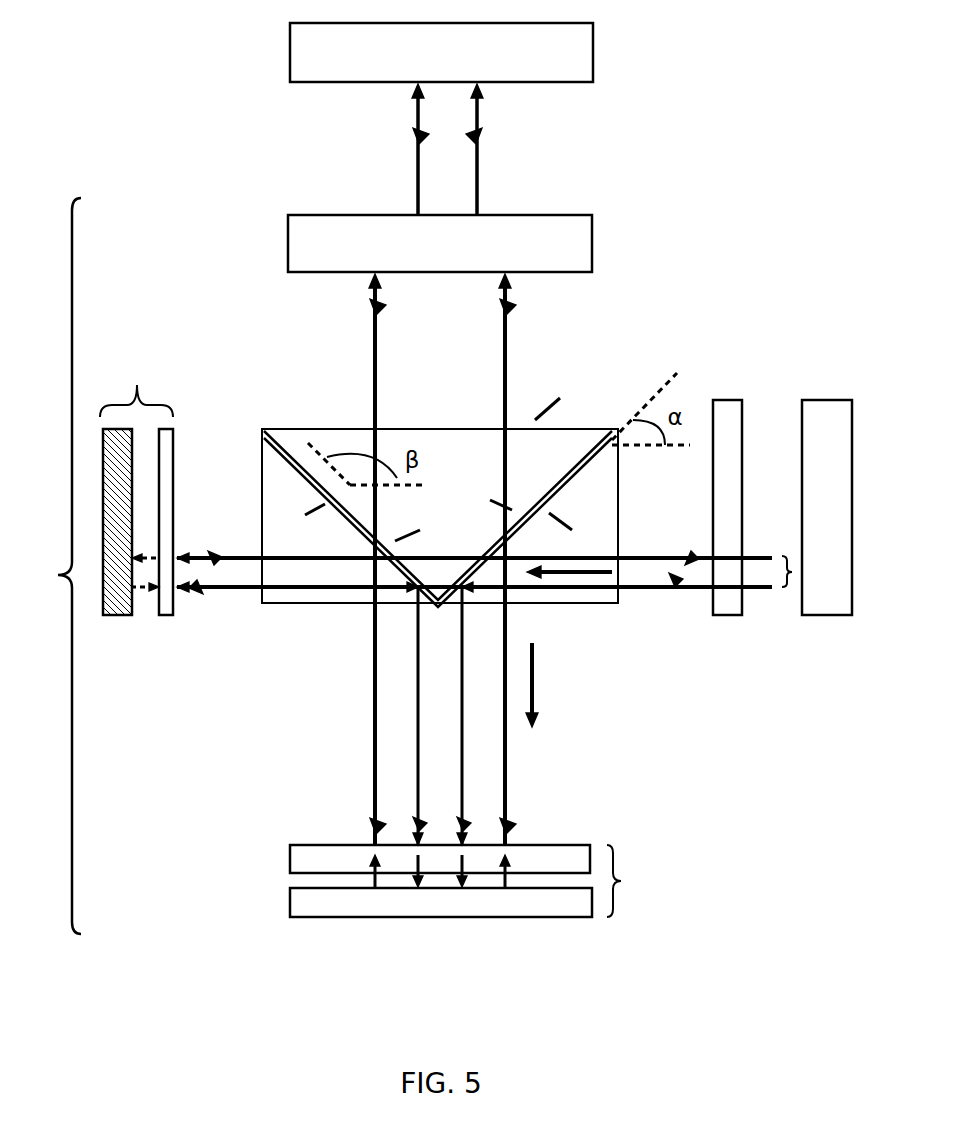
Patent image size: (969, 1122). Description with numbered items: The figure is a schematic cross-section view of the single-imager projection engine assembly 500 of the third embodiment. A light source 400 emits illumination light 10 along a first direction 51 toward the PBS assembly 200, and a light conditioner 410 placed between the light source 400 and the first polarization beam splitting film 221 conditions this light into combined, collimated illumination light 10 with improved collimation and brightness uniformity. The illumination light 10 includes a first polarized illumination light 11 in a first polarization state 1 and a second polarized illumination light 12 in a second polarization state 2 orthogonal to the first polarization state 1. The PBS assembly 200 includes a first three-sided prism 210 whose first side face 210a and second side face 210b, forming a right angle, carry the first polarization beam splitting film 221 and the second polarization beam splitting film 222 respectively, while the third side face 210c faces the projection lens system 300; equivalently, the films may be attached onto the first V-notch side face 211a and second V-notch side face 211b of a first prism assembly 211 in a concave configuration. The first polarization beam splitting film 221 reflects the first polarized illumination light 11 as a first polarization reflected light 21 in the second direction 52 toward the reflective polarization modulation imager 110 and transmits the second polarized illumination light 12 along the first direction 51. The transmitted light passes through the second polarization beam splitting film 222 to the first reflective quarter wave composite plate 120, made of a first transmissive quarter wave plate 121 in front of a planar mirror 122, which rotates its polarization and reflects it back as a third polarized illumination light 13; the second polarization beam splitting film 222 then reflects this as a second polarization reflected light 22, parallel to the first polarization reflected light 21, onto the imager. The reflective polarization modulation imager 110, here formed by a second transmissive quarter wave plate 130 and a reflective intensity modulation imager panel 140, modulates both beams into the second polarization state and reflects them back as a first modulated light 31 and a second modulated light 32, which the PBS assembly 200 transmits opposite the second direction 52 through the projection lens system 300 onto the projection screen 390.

The projection screen 390 is at (593, 48).
The projection lens system 300 is at (592, 243).
The second modulated light 32 is at (375, 338).
The first modulated light 31 is at (505, 335).
The second polarization reflected light 22 is at (418, 695).
The first polarization reflected light 21 is at (464, 770).
The second polarized illumination light 12 is at (650, 555).
The first polarized illumination light 11 is at (641, 592).
The second polarization state 2 is at (692, 550).
The first polarization state 1 is at (677, 590).
The illumination light 10 is at (785, 555).
The light conditioner 410 is at (733, 400).
The light source 400 is at (832, 615).
The first 3-sided prism 210 is at (453, 443).
The third side face 210c is at (550, 399).
The first side face 210a is at (477, 499).
The second side face 210b is at (431, 533).
The first prism assembly 211 is at (365, 609).
The first V-notch side face 211a is at (578, 531).
The second V-notch side face 211b is at (300, 522).
The second polarization beam splitting film 222 is at (266, 428).
The first polarization beam splitting film 221 is at (612, 430).
The first reflective quarter wave composite plate 120 is at (128, 528).
The planar mirror 122 is at (115, 615).
The first transmissive quarter wave plate 121 is at (165, 615).
The third polarized illumination light 13 is at (245, 590).
The PBS assembly 200 is at (268, 651).
The first direction 51 is at (598, 605).
The second direction 52 is at (540, 712).
The reflective polarization modulation imager 110 is at (440, 883).
The second transmissive quarter wave plate 130 is at (290, 858).
The reflective intensity modulation imager panel 140 is at (290, 908).
The single-imager projection engine assembly 500 is at (47, 566).